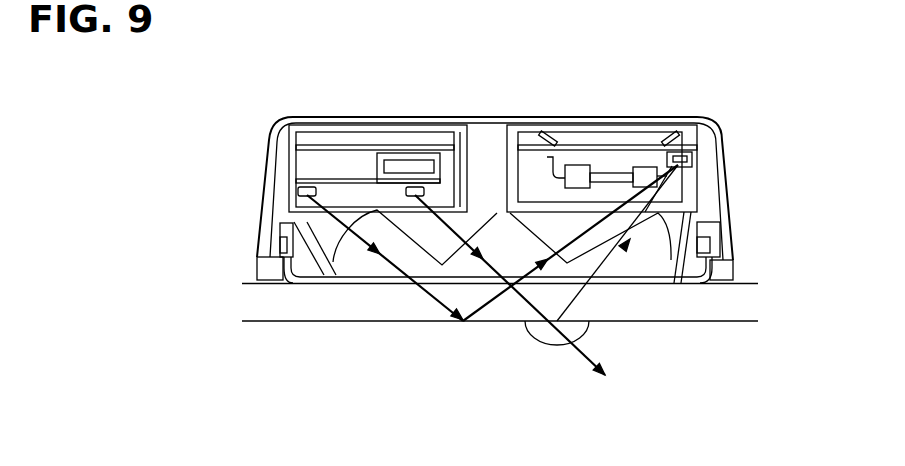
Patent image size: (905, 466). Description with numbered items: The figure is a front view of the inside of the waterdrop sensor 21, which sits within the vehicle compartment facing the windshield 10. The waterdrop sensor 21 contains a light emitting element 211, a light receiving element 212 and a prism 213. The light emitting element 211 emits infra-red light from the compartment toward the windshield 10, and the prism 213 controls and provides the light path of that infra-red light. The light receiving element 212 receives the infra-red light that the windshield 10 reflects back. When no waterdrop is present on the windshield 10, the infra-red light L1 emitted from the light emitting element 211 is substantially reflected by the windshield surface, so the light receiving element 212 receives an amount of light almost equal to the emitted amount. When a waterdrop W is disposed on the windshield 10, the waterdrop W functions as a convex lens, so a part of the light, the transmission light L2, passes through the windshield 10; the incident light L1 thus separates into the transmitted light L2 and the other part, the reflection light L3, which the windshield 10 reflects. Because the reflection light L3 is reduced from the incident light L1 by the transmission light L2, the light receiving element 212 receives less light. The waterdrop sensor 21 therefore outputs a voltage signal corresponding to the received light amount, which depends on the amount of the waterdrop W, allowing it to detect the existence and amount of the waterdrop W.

The waterdrop sensor 21 is at (752, 63).
The light emitting element 211 is at (307, 188).
The light receiving element 212 is at (694, 161).
The prism 213 is at (367, 223).
The windshield 10 is at (718, 308).
The infra-red light L1 is at (495, 260).
The transmission light L2 is at (590, 338).
The reflection light L3 is at (578, 298).
The waterdrop W is at (545, 340).